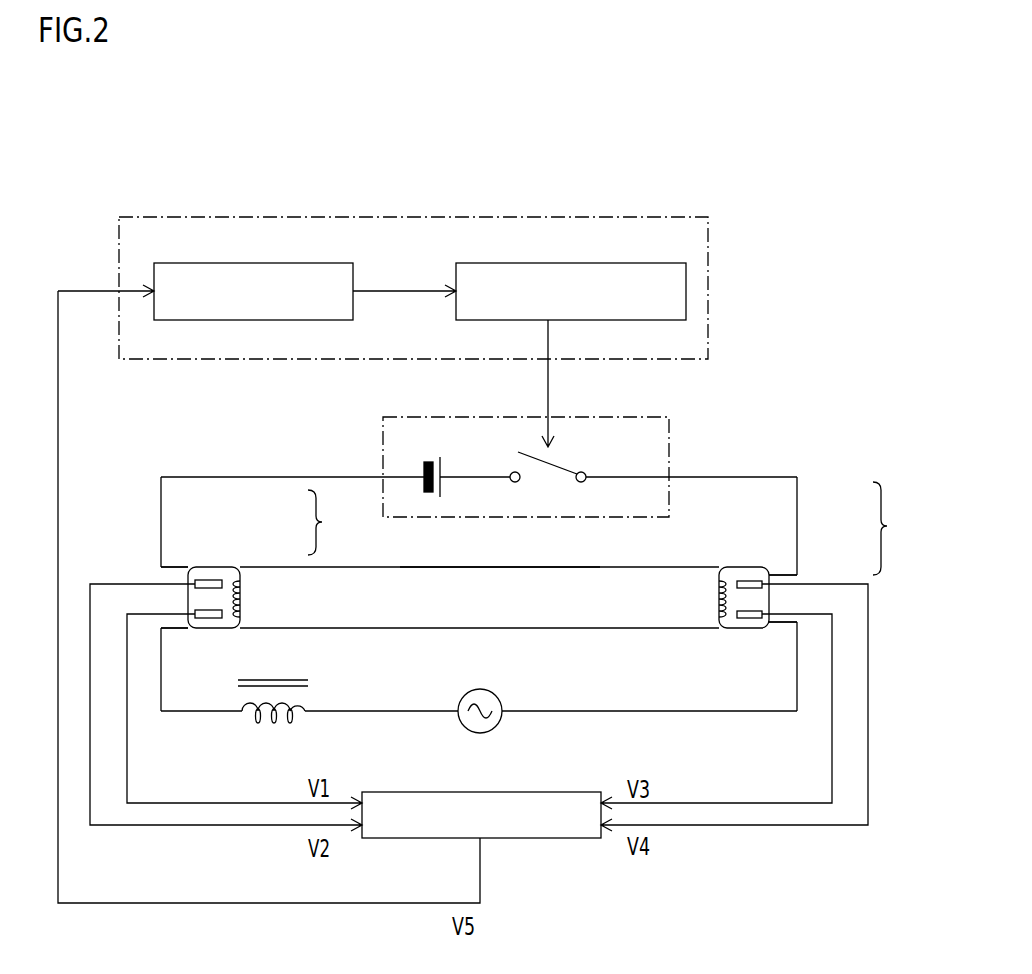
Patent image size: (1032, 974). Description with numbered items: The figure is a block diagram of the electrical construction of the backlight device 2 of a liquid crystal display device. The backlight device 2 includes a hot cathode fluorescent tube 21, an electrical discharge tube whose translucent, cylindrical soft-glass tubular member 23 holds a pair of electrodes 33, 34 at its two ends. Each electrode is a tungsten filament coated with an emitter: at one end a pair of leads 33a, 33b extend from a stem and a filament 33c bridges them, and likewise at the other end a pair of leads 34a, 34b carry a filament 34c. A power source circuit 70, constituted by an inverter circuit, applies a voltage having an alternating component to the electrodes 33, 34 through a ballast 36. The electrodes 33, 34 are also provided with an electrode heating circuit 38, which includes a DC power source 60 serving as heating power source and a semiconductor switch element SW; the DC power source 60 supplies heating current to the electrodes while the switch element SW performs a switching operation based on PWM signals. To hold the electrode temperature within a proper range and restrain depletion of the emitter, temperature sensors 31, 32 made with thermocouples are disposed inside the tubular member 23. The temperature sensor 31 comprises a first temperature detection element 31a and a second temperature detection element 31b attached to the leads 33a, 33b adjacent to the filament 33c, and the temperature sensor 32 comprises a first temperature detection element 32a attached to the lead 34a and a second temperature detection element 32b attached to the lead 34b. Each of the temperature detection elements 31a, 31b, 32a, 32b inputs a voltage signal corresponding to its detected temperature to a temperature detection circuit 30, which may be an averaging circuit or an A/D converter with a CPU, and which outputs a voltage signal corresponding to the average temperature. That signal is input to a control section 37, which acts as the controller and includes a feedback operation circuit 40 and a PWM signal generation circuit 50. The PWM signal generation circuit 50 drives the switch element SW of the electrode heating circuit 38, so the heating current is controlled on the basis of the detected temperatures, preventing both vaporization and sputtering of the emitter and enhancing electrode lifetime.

The backlight device 2 is at (742, 245).
The hot cathode fluorescent tube 21 is at (671, 560).
The tubular member 23 is at (511, 566).
The temperature detection circuit 30 is at (532, 838).
The temperature sensor 31 is at (226, 659).
The first temperature detection element 31a is at (207, 580).
The second temperature detection element 31b is at (222, 610).
The temperature sensor 32 is at (761, 656).
The first temperature detection element 32a is at (745, 581).
The second temperature detection element 32b is at (756, 611).
The electrode 33 is at (289, 599).
The lead 33a is at (193, 572).
The lead 33b is at (206, 628).
The filament 33c is at (242, 592).
The electrode 34 is at (761, 555).
The lead 34a is at (748, 581).
The lead 34b is at (742, 630).
The filament 34c is at (718, 606).
The ballast 36 is at (329, 695).
The control section 37 is at (384, 217).
The electrode heating circuit 38 is at (652, 417).
The feedback operation circuit 40 is at (237, 263).
The PWM signal generation circuit 50 is at (607, 263).
The DC power source 60 is at (434, 452).
The power source circuit 70 is at (488, 692).